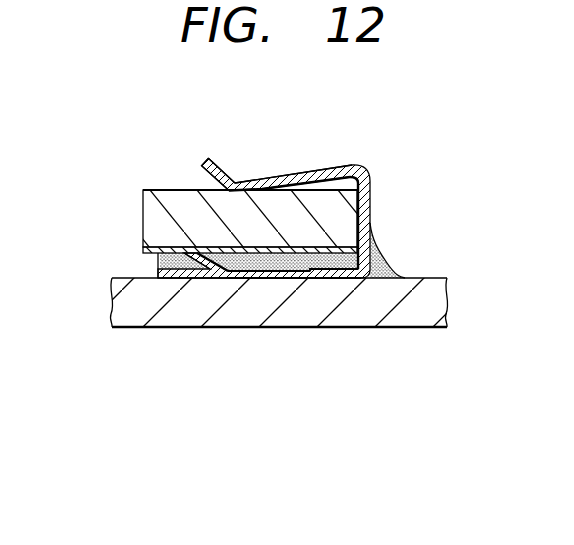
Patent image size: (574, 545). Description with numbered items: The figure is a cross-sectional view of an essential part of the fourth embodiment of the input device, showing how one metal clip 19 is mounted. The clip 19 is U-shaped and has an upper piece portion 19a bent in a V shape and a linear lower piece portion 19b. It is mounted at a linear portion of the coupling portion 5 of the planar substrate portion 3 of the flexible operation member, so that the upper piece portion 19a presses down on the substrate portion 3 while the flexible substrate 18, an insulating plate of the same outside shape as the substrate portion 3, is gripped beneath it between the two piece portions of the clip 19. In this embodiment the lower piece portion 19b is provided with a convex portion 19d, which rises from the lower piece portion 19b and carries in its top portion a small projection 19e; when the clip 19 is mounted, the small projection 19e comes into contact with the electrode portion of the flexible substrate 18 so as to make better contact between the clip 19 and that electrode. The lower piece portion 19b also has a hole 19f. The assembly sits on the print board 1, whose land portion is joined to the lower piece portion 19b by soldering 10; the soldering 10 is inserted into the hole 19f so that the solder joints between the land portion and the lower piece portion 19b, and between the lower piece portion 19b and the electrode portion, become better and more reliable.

The print board 1 is at (417, 313).
The substrate portion 3 is at (158, 183).
The coupling portion 5 is at (152, 202).
The soldering 10 is at (390, 258).
The flexible substrate 18 is at (149, 268).
The clip 19 is at (376, 158).
The upper piece portion 19a is at (263, 180).
The lower piece portion 19b is at (333, 279).
The convex portion 19d is at (216, 264).
The small projection 19e is at (190, 250).
The hole 19f is at (296, 282).